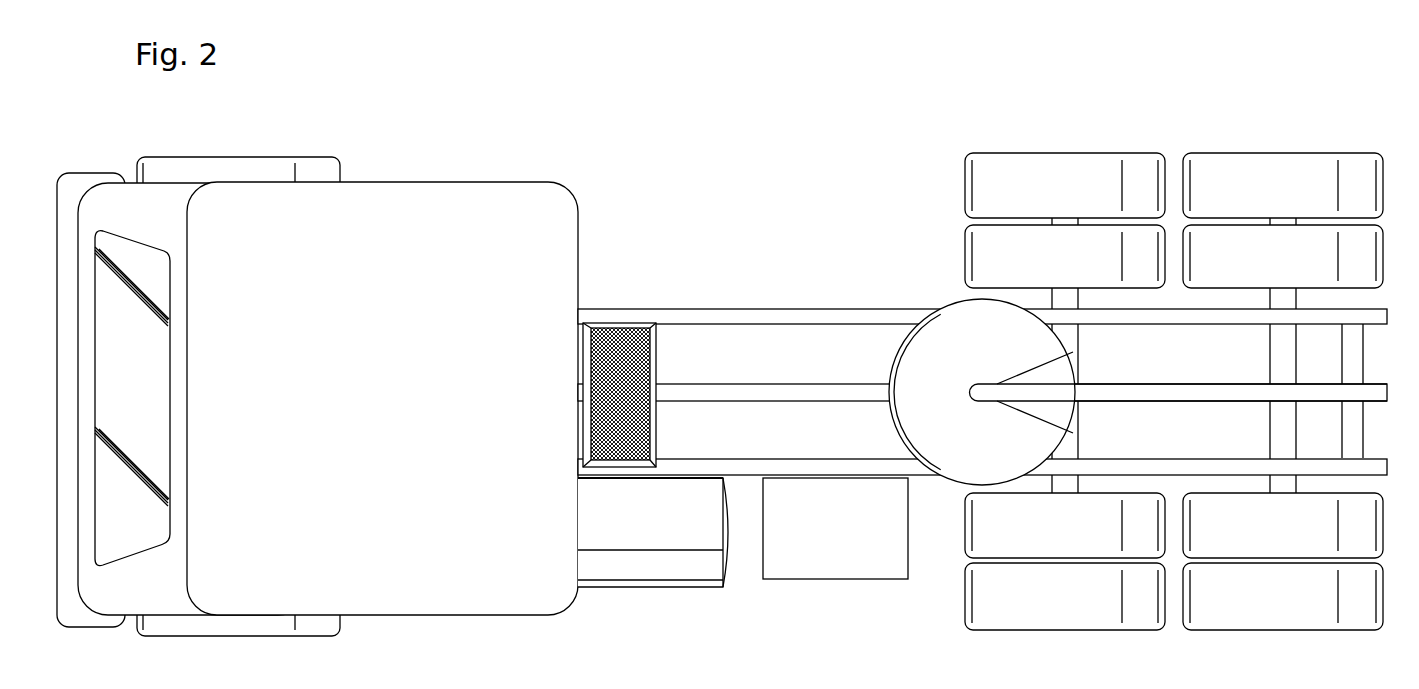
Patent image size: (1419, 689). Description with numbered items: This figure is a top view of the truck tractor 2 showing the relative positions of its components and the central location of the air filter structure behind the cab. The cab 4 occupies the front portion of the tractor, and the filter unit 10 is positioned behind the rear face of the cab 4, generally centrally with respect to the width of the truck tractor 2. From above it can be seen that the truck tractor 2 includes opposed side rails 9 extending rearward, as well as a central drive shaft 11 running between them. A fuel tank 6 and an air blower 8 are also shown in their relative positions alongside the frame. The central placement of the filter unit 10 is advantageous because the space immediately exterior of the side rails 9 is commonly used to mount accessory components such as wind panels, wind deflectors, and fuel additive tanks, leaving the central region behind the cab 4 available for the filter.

The truck tractor 2 is at (629, 196).
The cab 4 is at (427, 256).
The fuel tank 6 is at (655, 570).
The air blower 8 is at (847, 567).
The side rail 9 is at (815, 308).
The filter unit 10 is at (667, 357).
The central drive shaft 11 is at (763, 388).